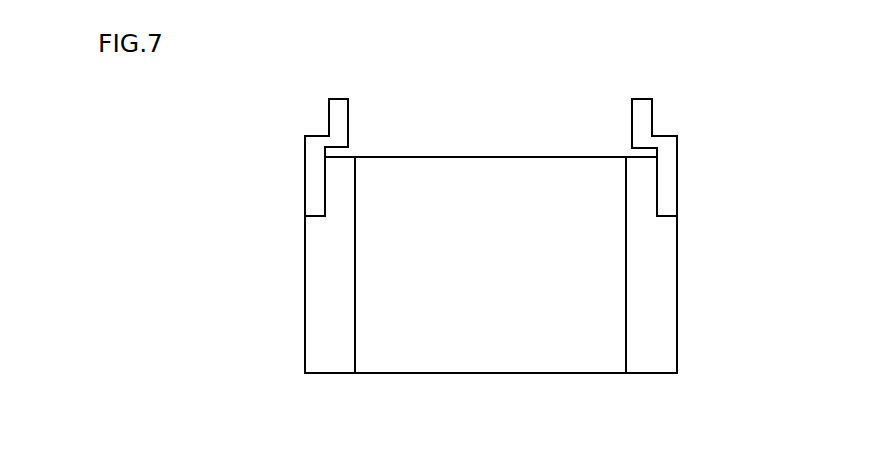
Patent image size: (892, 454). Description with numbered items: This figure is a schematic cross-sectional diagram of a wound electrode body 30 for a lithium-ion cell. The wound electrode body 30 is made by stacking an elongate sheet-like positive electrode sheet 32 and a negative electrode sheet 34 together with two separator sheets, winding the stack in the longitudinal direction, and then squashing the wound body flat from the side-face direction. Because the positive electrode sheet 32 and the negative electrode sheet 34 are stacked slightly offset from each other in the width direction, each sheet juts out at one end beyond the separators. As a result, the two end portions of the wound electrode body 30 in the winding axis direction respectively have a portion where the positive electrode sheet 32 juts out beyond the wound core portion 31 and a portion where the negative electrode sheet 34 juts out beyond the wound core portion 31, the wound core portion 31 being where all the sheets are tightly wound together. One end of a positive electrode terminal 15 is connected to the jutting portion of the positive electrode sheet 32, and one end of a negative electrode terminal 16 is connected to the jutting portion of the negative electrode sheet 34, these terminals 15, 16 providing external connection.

The wound electrode body 30 is at (262, 253).
The negative electrode terminal 16 is at (328, 106).
The positive electrode terminal 15 is at (653, 106).
The negative electrode sheet 34 is at (323, 362).
The wound core portion 31 is at (451, 360).
The positive electrode sheet 32 is at (648, 361).